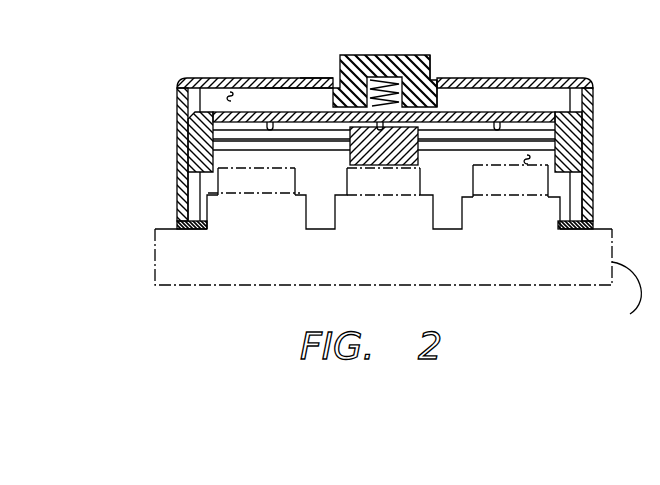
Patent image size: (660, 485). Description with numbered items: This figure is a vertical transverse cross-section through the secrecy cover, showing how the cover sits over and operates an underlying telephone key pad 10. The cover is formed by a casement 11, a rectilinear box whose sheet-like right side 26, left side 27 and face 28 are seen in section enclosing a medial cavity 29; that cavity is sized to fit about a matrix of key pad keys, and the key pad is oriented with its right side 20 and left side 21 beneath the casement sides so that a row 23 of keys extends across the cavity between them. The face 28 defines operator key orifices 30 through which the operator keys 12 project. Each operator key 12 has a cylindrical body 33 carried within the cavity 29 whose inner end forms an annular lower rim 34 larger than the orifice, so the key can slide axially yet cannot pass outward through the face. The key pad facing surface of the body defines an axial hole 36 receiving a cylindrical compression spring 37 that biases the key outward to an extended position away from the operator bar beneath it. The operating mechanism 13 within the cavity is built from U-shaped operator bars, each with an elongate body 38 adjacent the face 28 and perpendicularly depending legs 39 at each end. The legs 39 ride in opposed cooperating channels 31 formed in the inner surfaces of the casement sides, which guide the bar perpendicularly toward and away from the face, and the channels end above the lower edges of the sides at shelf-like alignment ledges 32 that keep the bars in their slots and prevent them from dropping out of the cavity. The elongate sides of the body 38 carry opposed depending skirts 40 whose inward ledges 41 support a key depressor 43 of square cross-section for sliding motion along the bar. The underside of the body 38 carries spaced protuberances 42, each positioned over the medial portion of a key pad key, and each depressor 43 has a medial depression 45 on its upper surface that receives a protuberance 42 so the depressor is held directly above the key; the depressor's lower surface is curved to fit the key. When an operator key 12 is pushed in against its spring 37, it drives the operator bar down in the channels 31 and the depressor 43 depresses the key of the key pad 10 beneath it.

The key pad 10 is at (267, 285).
The casement 11 is at (180, 82).
The operator keys 12 is at (385, 50).
The operating mechanism 13 is at (495, 80).
The right side 20 is at (378, 274).
The left side 21 is at (155, 268).
The rows 23 is at (410, 172).
The right side 26 is at (572, 164).
The left side 27 is at (177, 150).
The face 28 is at (220, 78).
The medial cavity 29 is at (235, 92).
The operator key orifices 30 is at (321, 78).
The channels 31 is at (190, 101).
The alignment ledges 32 is at (188, 228).
The cylindrical bodies 33 is at (366, 58).
The lower rims 34 is at (296, 80).
The holes 36 is at (431, 62).
The compression springs 37 is at (433, 90).
The elongate body 38 is at (541, 112).
The legs 39 is at (180, 210).
The skirts 40 is at (527, 152).
The ledges 41 is at (303, 137).
The protuberances 42 is at (499, 122).
The key depressors 43 is at (395, 166).
The medial depression 45 is at (407, 148).